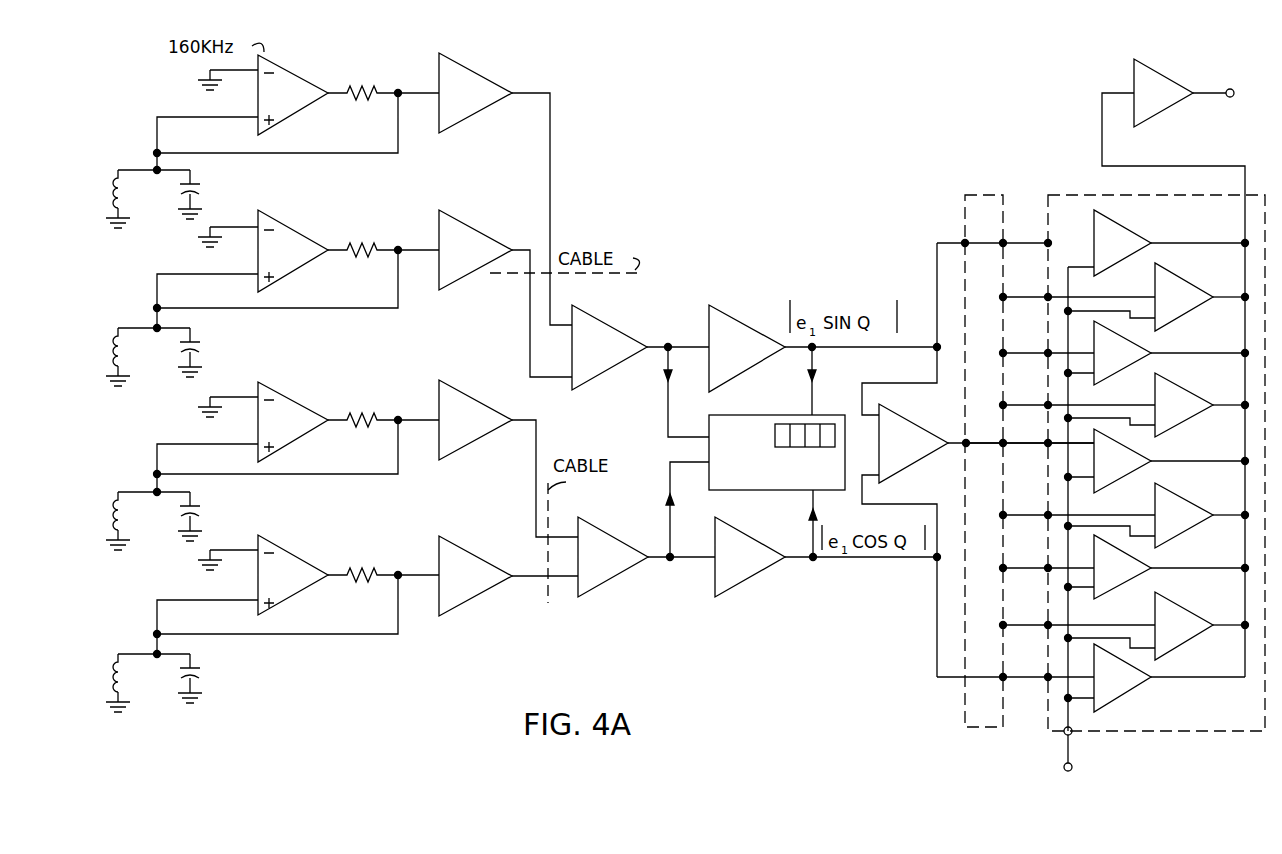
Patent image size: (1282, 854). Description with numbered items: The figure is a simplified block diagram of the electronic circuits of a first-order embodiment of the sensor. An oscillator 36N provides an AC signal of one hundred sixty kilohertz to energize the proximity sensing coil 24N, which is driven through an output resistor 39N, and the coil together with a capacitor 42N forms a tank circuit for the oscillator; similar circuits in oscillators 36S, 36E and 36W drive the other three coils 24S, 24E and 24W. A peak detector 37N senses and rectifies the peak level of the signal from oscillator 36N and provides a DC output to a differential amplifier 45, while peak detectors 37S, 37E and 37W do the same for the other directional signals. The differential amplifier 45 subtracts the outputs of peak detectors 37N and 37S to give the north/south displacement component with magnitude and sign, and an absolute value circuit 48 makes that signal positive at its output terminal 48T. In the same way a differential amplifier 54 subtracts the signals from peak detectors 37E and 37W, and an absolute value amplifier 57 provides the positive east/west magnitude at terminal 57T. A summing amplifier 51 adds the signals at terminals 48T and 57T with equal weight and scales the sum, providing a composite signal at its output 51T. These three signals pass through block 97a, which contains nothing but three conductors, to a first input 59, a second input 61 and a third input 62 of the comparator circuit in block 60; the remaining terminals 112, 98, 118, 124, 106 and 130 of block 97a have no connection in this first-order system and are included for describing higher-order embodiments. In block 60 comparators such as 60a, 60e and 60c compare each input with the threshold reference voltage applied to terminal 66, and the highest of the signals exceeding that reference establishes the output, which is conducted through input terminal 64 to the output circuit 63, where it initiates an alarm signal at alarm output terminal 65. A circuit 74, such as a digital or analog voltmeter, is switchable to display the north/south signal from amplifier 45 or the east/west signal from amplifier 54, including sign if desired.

The proximity sensing coil 24N is at (110, 180).
The proximity sensing coil 24S is at (110, 335).
The proximity sensing coil 24E is at (110, 500).
The proximity sensing coil 24W is at (110, 654).
The oscillator 36N is at (300, 80).
The oscillator 36S is at (300, 235).
The oscillator 36E is at (300, 395).
The oscillator 36W is at (300, 549).
The peak detector 37N is at (498, 84).
The peak detector 37S is at (488, 234).
The peak detector 37E is at (456, 394).
The peak detector 37W is at (456, 549).
The output resistor 39N is at (385, 88).
The capacitor 42N is at (199, 192).
The differential amplifier 45 is at (592, 319).
The absolute value circuit 48 is at (722, 307).
The output terminal 48T is at (814, 349).
The differential amplifier 54 is at (596, 529).
The absolute value amplifier 57 is at (735, 529).
The output terminal 57T is at (813, 560).
The summing amplifier 51 is at (914, 430).
The output terminal 51T is at (964, 446).
The circuit 74 is at (743, 414).
The block 97a is at (983, 195).
The second input 61 is at (1019, 243).
The output terminal 112 is at (1019, 297).
The terminal 98 is at (1019, 353).
The terminal 118 is at (1022, 398).
The first input 59 is at (1008, 450).
The terminal 124 is at (1019, 514).
The terminal 106 is at (1019, 567).
The terminal 130 is at (1019, 624).
The third input 62 is at (1019, 676).
The comparator circuit 60 is at (1162, 194).
The comparator 60a is at (1136, 229).
The comparator 60e is at (1140, 438).
The comparator 60c is at (1128, 698).
The output circuit 63 is at (1173, 109).
The input terminal 64 is at (1248, 166).
The alarm output terminal 65 is at (1228, 89).
The terminal 66 is at (1064, 735).